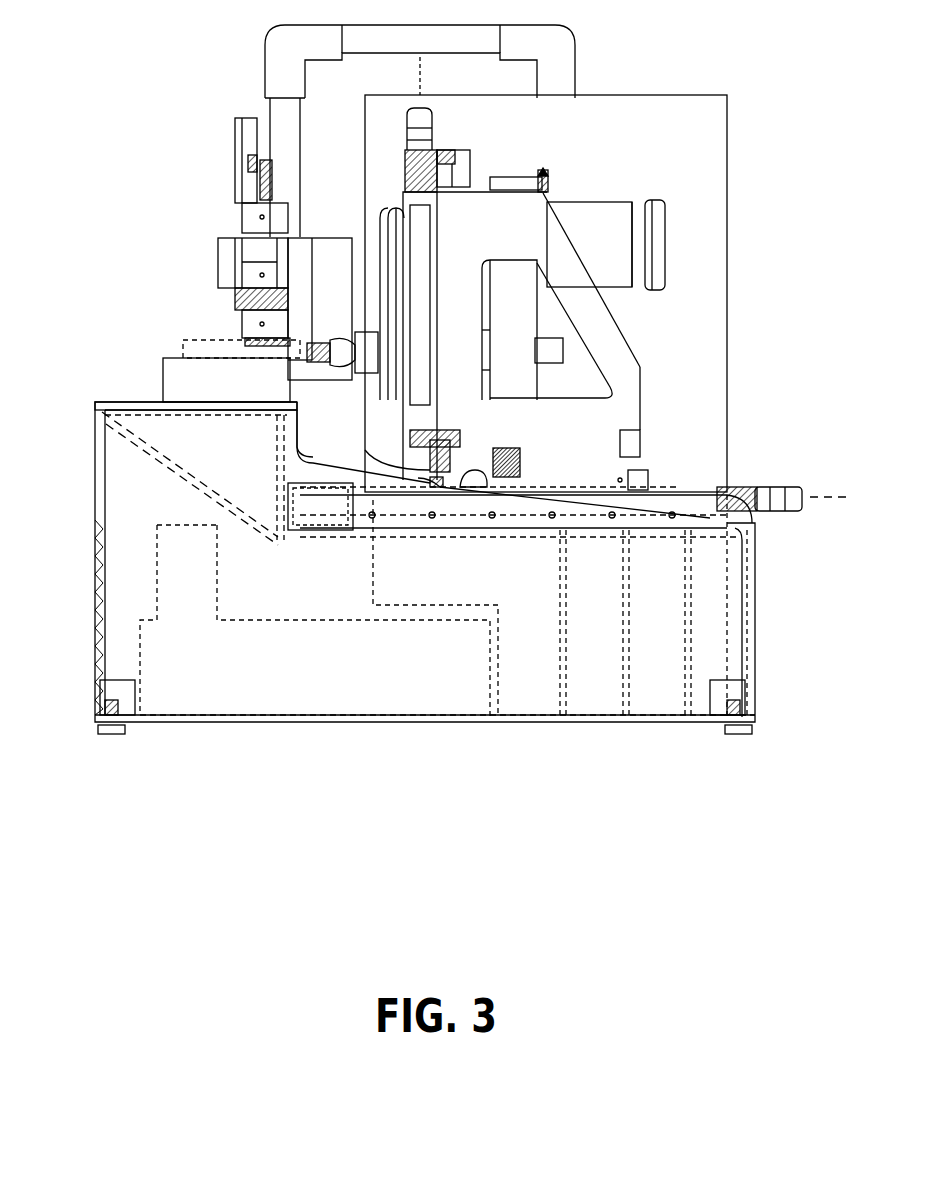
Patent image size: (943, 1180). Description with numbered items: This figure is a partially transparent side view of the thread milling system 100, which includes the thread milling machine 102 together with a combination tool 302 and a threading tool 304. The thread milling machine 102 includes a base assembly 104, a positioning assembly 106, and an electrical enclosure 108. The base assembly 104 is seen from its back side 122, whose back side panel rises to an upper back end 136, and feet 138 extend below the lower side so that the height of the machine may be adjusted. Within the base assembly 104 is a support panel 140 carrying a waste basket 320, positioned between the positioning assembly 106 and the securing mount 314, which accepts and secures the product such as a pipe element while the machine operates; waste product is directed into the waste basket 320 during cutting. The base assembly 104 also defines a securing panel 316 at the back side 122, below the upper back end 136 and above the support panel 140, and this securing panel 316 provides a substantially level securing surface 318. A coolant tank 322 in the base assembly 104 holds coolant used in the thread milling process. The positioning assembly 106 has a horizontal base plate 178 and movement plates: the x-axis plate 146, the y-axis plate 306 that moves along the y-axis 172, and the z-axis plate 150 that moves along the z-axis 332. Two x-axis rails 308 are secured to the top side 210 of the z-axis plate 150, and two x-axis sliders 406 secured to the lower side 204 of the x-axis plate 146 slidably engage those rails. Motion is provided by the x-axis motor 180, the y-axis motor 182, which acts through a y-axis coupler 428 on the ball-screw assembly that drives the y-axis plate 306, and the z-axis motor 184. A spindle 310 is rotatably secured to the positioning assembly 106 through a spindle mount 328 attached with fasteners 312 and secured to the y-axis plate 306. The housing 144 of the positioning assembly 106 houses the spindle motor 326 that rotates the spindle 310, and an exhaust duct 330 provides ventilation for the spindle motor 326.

The thread milling system 100 is at (148, 136).
The thread milling machine 102 is at (742, 62).
The base assembly 104 is at (95, 460).
The positioning assembly 106 is at (641, 377).
The electrical enclosure 108 is at (640, 100).
The back side 122 is at (95, 430).
The upper back end 136 is at (263, 413).
The feet 138 is at (110, 737).
The support panel 140 is at (738, 547).
The housing 144 is at (555, 231).
The x-axis plate 146 is at (640, 434).
The z-axis plate 150 is at (640, 470).
The y-axis 172 is at (424, 93).
The horizontal base plate 178 is at (680, 527).
The x-axis motor 180 is at (520, 462).
The y-axis motor 182 is at (435, 126).
The z-axis motor 184 is at (782, 483).
The lower side 204 is at (400, 452).
The top side 210 is at (438, 480).
The combination tool 302 is at (348, 370).
The threading tool 304 is at (258, 335).
The y-axis plate 306 is at (405, 210).
The x-axis rails 308 is at (457, 443).
The spindle 310 is at (352, 320).
The fasteners 312 is at (390, 357).
The securing mount 314 is at (246, 291).
The securing panel 316 is at (162, 387).
The securing surface 318 is at (112, 404).
The waste basket 320 is at (306, 535).
The coolant tank 322 is at (259, 720).
The spindle motor 326 is at (520, 180).
The spindle mount 328 is at (383, 300).
The exhaust duct 330 is at (650, 200).
The z-axis 332 is at (816, 496).
The x-axis sliders 406 is at (440, 437).
The y-axis coupler 428 is at (461, 164).